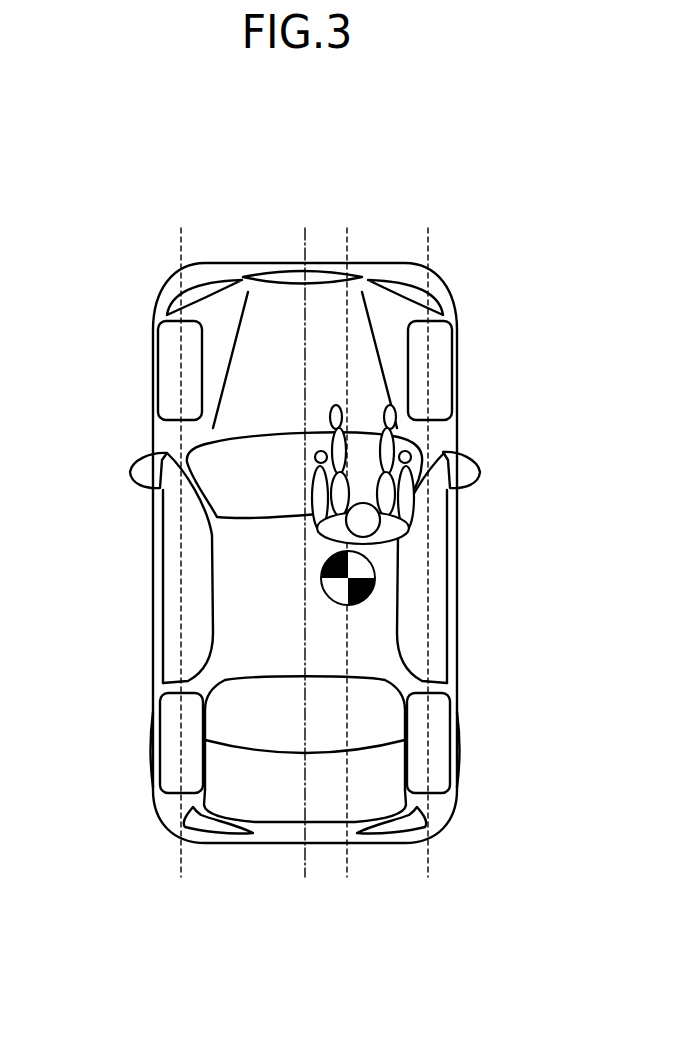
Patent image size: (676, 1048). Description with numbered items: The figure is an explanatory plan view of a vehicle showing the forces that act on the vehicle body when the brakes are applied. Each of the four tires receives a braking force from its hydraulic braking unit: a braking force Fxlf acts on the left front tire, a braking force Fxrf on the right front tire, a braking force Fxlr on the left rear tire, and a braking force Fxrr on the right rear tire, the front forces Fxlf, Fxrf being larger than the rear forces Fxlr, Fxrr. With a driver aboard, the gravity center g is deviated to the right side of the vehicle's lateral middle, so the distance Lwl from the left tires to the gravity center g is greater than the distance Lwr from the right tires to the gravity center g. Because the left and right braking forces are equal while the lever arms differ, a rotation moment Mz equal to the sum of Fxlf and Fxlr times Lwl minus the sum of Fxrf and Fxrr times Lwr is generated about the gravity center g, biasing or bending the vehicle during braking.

The gravity center g is at (345, 582).
The rotation moment Mz is at (349, 204).
The braking force Fxlf is at (100, 348).
The braking force Fxrf is at (496, 347).
The braking force Fxlr is at (100, 720).
The braking force Fxrr is at (496, 720).
The distance Lwl is at (347, 863).
The distance Lwr is at (347, 863).